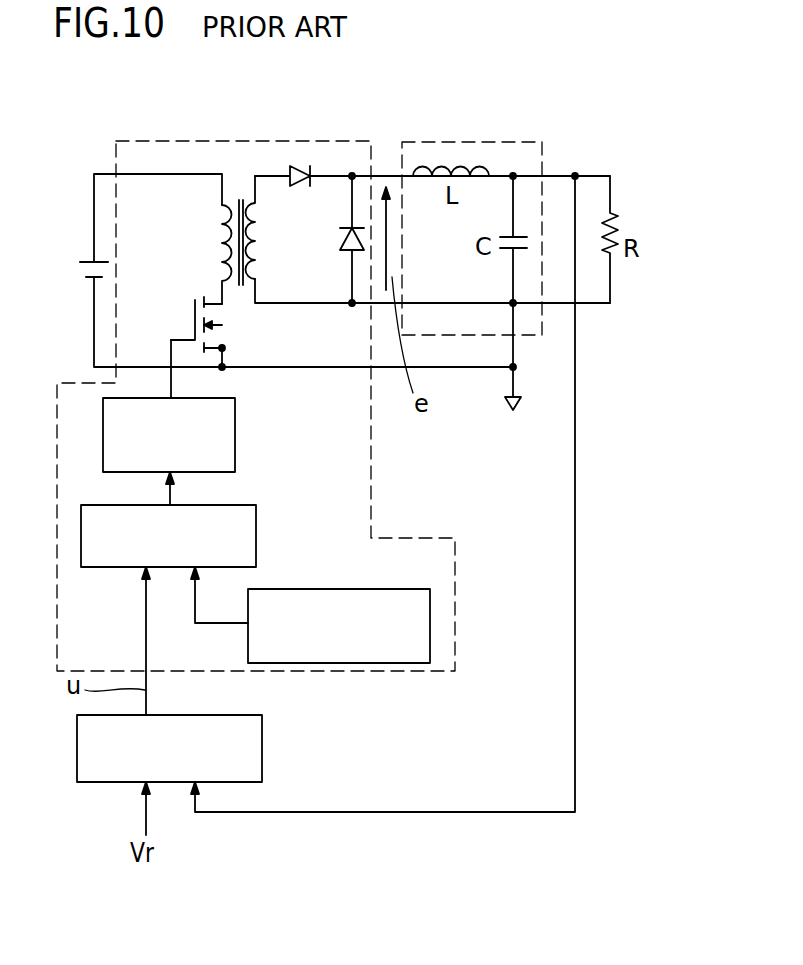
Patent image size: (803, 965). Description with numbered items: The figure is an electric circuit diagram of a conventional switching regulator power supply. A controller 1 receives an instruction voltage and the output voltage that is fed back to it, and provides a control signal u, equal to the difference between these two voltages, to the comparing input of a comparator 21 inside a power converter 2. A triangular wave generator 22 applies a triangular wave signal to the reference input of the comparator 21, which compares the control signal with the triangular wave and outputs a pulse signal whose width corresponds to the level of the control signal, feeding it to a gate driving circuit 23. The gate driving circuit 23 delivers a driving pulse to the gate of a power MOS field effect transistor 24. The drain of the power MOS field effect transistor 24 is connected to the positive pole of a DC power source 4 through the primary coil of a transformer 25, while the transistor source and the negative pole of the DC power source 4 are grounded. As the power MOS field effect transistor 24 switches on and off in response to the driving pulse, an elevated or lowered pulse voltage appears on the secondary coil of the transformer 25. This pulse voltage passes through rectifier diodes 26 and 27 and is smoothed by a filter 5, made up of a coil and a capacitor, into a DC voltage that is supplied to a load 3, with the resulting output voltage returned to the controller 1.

The controller 1 is at (77, 733).
The power converter 2 is at (268, 141).
The load 3 is at (620, 220).
The DC power source 4 is at (80, 265).
The filter 5 is at (470, 141).
The comparator 21 is at (256, 537).
The triangular wave generator 22 is at (345, 589).
The gate driving circuit 23 is at (237, 420).
The power MOS field effect transistor 24 is at (193, 322).
The transformer 25 is at (262, 233).
The rectifier diode 26 is at (310, 182).
The rectifier diode 27 is at (343, 243).